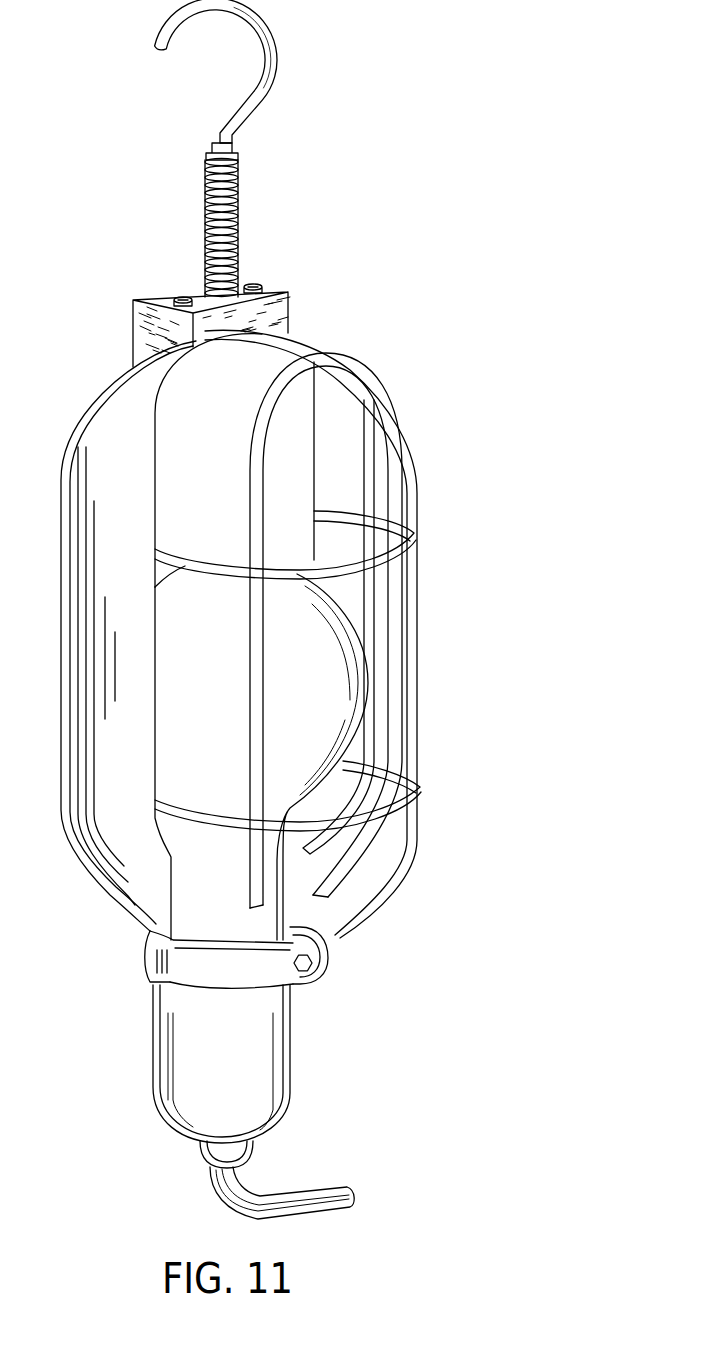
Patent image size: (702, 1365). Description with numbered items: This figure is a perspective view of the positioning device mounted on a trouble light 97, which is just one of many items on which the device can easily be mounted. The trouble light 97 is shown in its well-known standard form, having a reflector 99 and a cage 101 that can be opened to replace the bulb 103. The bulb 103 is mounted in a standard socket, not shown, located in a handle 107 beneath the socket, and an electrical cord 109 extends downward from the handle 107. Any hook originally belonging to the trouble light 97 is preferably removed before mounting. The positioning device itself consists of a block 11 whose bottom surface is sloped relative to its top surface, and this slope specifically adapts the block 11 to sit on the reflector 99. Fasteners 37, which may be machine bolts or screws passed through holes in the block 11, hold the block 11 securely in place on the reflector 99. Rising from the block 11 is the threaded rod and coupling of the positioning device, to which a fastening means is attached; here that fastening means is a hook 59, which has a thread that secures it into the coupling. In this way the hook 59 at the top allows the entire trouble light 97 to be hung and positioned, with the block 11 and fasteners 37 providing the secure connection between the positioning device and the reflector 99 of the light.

The hook 59 is at (277, 30).
The fasteners 37 is at (256, 284).
The block 11 is at (289, 311).
The trouble light 97 is at (80, 898).
The reflector 99 is at (317, 454).
The cage 101 is at (253, 694).
The bulb 103 is at (293, 928).
The handle 107 is at (197, 1100).
The electrical cord 109 is at (260, 1192).